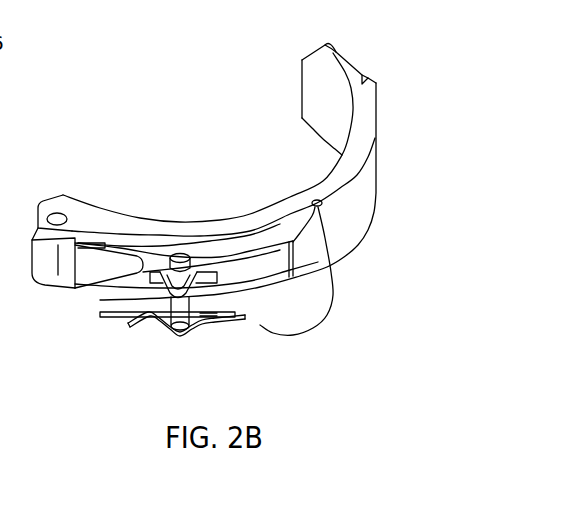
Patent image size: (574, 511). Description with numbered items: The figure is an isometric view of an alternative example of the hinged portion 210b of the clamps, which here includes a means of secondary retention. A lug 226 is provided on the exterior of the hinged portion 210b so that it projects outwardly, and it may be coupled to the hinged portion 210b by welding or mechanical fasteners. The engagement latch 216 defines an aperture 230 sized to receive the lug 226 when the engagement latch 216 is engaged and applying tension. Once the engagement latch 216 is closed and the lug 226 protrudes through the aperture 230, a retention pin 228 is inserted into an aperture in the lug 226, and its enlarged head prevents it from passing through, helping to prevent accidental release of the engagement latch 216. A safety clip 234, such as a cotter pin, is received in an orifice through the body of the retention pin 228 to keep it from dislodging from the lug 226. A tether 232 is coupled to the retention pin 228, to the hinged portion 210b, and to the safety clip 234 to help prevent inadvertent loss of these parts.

The hinged portion 210b is at (167, 79).
The engagement latch 216 is at (110, 270).
The lug 226 is at (178, 294).
The retention pin 228 is at (180, 254).
The aperture 230 is at (142, 264).
The tether 232 is at (334, 277).
The safety clip 234 is at (148, 319).